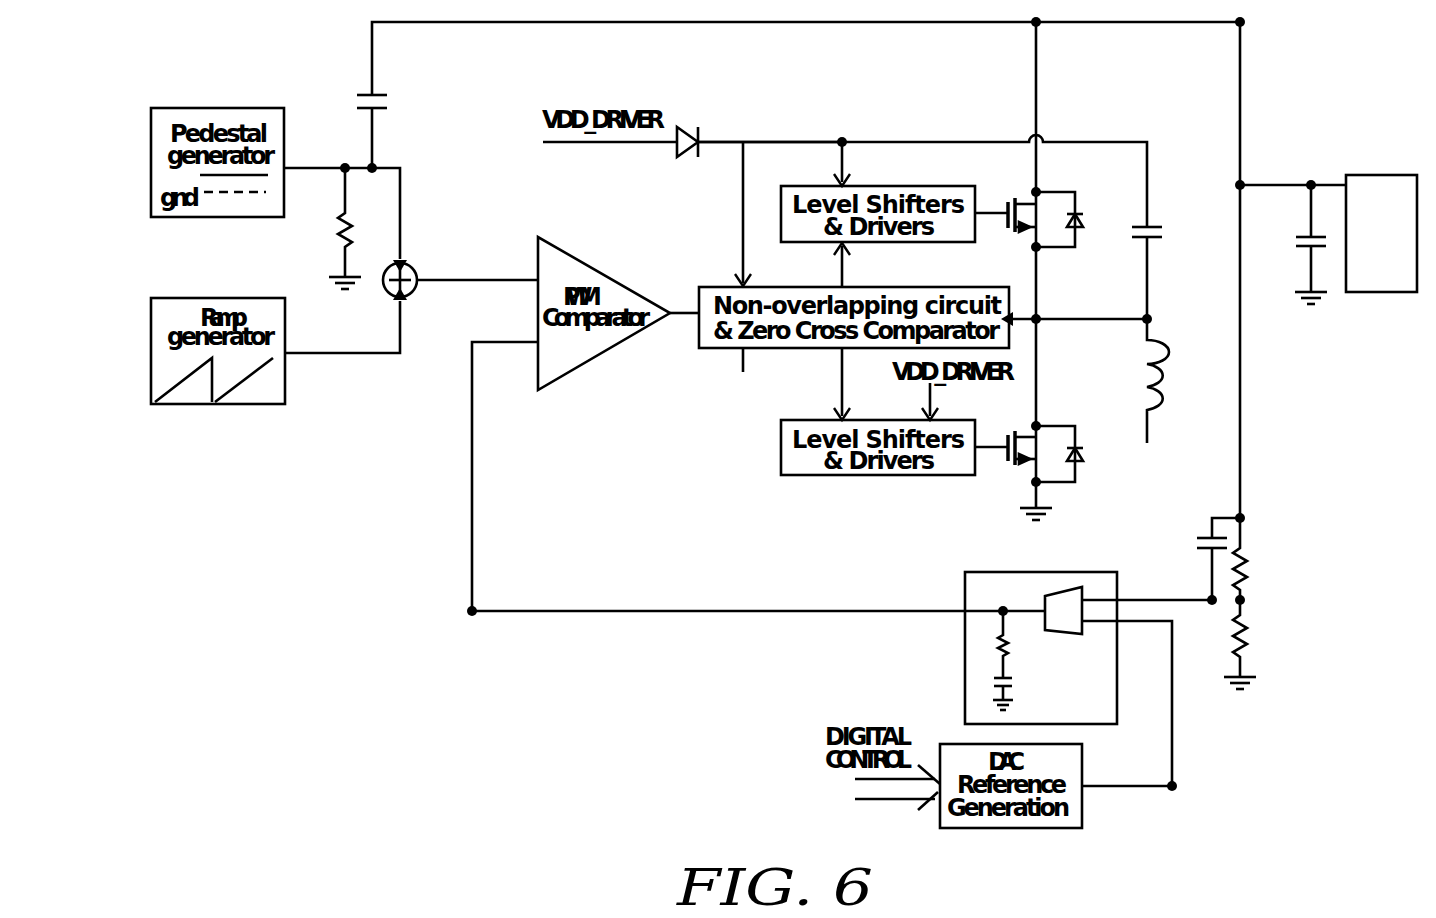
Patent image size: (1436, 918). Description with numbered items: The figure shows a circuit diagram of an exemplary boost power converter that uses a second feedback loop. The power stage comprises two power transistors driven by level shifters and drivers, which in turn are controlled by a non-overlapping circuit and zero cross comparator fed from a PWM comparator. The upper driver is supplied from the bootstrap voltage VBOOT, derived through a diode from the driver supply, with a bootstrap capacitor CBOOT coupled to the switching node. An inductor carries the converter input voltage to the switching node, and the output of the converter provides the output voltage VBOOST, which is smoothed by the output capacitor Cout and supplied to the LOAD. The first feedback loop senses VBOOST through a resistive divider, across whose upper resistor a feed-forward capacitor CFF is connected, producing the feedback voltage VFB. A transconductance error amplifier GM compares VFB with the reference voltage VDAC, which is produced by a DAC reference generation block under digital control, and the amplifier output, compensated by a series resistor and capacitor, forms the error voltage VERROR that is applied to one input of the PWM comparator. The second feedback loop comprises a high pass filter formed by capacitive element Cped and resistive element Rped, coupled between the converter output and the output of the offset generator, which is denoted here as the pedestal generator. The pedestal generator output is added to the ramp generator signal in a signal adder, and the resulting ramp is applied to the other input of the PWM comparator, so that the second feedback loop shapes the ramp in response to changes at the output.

The capacitive element Cped is at (351, 89).
The resistive element Rped is at (319, 228).
The bootstrap capacitor CBOOT is at (958, 227).
The output capacitor Cout is at (1294, 244).
The load LOAD is at (1381, 233).
The output voltage VBOOST is at (1293, 168).
The feed-forward capacitor CFF is at (1204, 556).
The feedback voltage VFB is at (1169, 603).
The transconductance error amplifier GM is at (1063, 610).
The DAC reference voltage VDAC is at (1127, 721).
The error voltage VERROR is at (758, 476).
The bootstrap voltage VBOOT is at (786, 124).